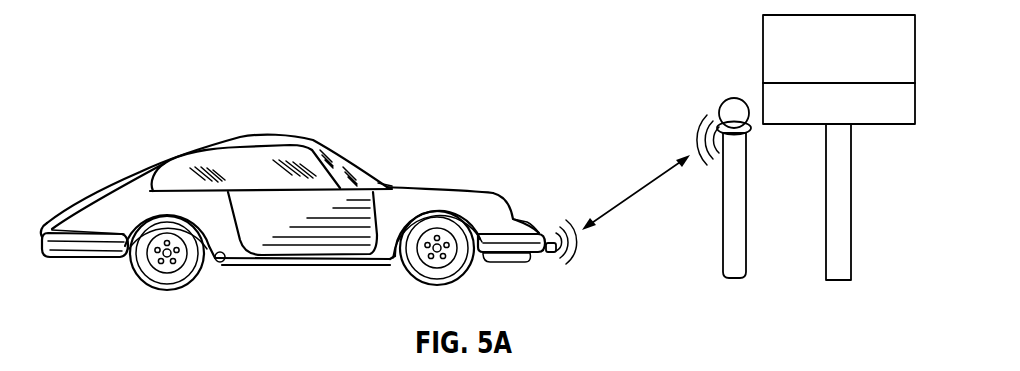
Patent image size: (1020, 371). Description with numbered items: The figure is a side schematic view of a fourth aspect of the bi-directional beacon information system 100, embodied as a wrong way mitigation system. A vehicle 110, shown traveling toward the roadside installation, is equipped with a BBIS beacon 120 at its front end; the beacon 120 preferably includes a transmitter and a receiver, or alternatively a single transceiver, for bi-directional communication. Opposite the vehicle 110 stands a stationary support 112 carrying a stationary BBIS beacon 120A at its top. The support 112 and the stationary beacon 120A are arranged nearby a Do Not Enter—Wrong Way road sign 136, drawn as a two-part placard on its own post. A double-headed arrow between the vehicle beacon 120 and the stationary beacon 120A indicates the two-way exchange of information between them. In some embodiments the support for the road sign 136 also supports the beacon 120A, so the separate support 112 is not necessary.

The bi-directional beacon information system 100 is at (552, 98).
The vehicle 110 is at (252, 138).
The BBIS beacon 120 is at (552, 257).
The stationary BBIS beacon 120A is at (716, 99).
The stationary support 112 is at (735, 208).
The road sign 136 is at (763, 47).